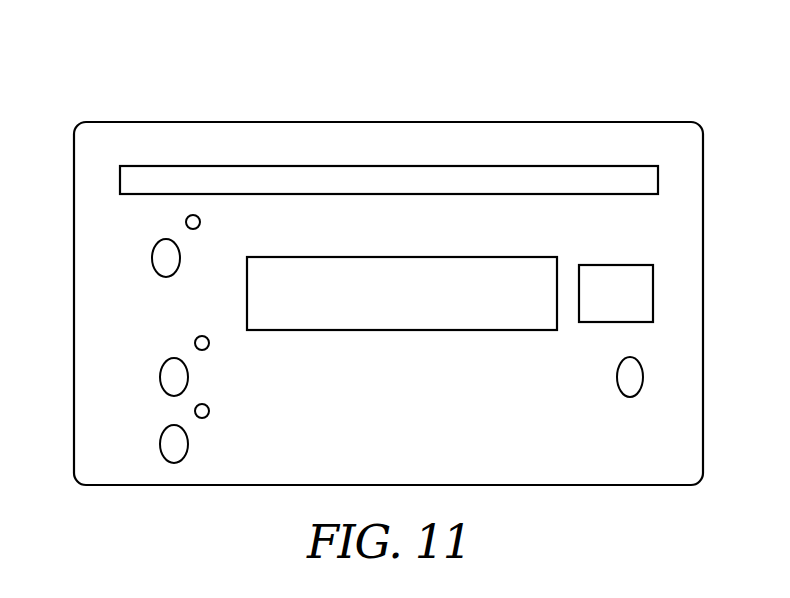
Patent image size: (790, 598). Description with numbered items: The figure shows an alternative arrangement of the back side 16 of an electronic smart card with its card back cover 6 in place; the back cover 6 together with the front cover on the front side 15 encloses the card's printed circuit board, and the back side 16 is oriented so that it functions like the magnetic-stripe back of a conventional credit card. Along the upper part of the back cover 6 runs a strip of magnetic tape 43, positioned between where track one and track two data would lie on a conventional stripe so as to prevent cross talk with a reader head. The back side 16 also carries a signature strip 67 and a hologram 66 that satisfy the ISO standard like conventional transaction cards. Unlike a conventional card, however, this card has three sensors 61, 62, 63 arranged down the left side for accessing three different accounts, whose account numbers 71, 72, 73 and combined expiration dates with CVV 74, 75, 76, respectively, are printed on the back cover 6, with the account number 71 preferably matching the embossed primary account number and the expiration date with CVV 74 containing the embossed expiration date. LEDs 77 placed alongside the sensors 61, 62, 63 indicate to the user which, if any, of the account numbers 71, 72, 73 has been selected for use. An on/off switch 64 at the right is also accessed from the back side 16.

The card back cover 6 is at (627, 229).
The front side 15 is at (664, 0).
The back side 16 is at (201, 118).
The strip of magnetic tape 43 is at (305, 178).
The sensor 61 is at (165, 270).
The sensor 62 is at (174, 362).
The sensor 63 is at (174, 430).
The on/off switch 64 is at (638, 368).
The hologram 66 is at (627, 290).
The signature strip 67 is at (482, 268).
The account number 71 is at (395, 238).
The account number 72 is at (383, 350).
The account number 73 is at (554, 396).
The expiration date with CVV 74 is at (95, 250).
The expiration date with CVV 75 is at (100, 370).
The expiration date with CVV 76 is at (100, 438).
The LEDs 77 is at (189, 219).